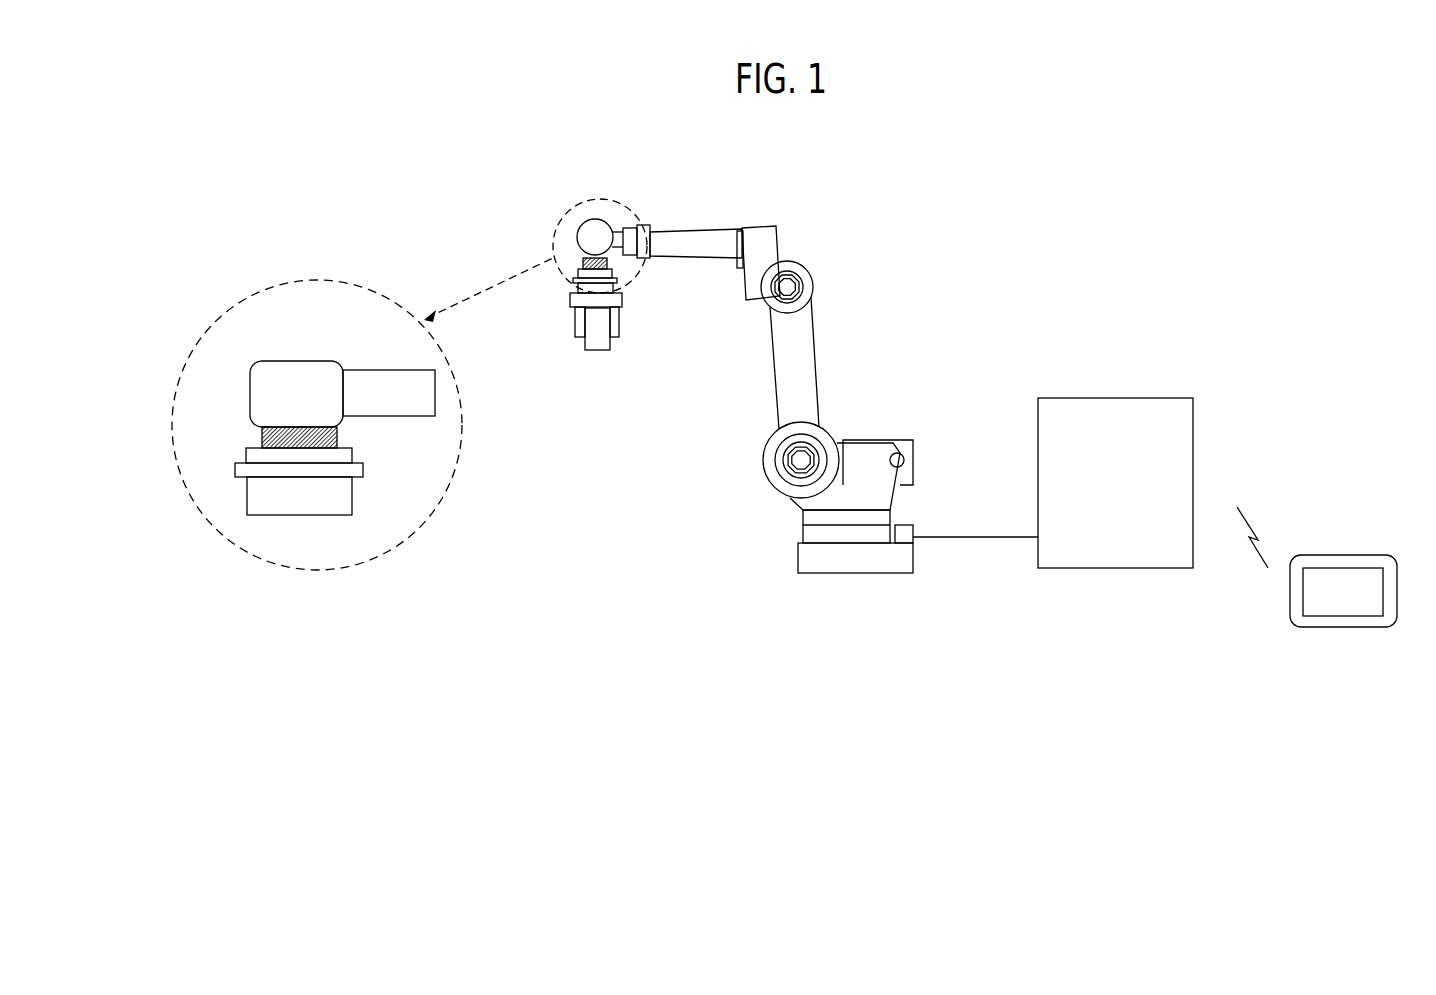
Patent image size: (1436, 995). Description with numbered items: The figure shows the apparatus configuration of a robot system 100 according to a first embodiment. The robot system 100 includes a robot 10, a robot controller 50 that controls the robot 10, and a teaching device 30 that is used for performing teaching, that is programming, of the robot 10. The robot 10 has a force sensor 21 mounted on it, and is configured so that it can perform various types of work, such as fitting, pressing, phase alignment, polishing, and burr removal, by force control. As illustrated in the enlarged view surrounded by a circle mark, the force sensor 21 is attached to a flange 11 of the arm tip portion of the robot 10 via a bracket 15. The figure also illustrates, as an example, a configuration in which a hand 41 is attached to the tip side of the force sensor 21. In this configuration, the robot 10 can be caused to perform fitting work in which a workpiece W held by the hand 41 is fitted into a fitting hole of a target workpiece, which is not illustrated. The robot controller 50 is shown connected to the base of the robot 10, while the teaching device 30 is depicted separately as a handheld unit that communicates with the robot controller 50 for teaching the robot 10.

The robot system 100 is at (984, 230).
The robot 10 is at (824, 342).
The flange 11 is at (580, 261).
The bracket 15 is at (613, 272).
The force sensor 21 is at (613, 287).
The hand 41 is at (572, 316).
The workpiece W is at (612, 343).
The robot controller 50 is at (1113, 398).
The teaching device 30 is at (1345, 555).